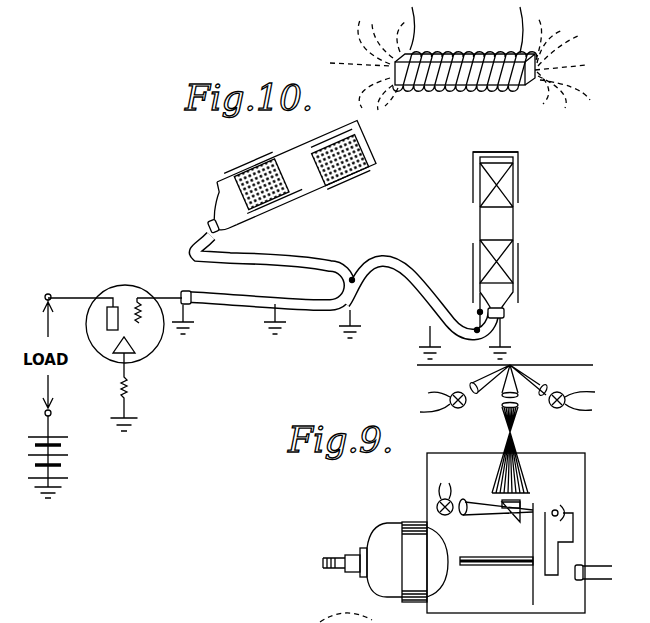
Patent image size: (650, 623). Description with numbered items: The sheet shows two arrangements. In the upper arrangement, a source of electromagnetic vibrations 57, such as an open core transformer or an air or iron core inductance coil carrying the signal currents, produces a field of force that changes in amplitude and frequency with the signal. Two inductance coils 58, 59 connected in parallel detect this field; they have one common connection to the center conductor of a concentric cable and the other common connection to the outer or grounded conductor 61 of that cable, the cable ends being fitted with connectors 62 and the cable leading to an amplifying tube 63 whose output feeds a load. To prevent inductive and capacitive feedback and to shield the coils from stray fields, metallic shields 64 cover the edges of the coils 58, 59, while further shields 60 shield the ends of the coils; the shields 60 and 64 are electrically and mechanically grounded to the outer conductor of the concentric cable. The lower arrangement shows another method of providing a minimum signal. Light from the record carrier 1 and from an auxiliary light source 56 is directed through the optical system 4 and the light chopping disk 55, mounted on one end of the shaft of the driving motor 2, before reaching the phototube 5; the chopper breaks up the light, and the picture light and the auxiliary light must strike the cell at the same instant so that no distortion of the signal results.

In FIG. 10, the source of electromagnetic vibrations 57 is at (462, 93).
In FIG. 10, the inductance coil 58 is at (308, 189).
In FIG. 10, the inductance coil 59 is at (514, 210).
In FIG. 10, the shield 60 is at (222, 170).
In FIG. 10, the outer or grounded conductor 61 is at (200, 288).
In FIG. 10, the connectors 62 is at (225, 229).
In FIG. 10, the amplifier tube 63 is at (120, 284).
In FIG. 10, the metallic shield 64 is at (357, 122).
In FIG. 9, the metallic shield 64 is at (337, 606).
In FIG. 9, the record carrier 1 is at (443, 367).
In FIG. 9, the driving motor 2 is at (382, 538).
In FIG. 9, the optical system 4 is at (502, 401).
In FIG. 9, the phototube 5 is at (557, 508).
In FIG. 9, the light chopping disk 55 is at (533, 586).
In FIG. 9, the lamp 56 is at (457, 516).